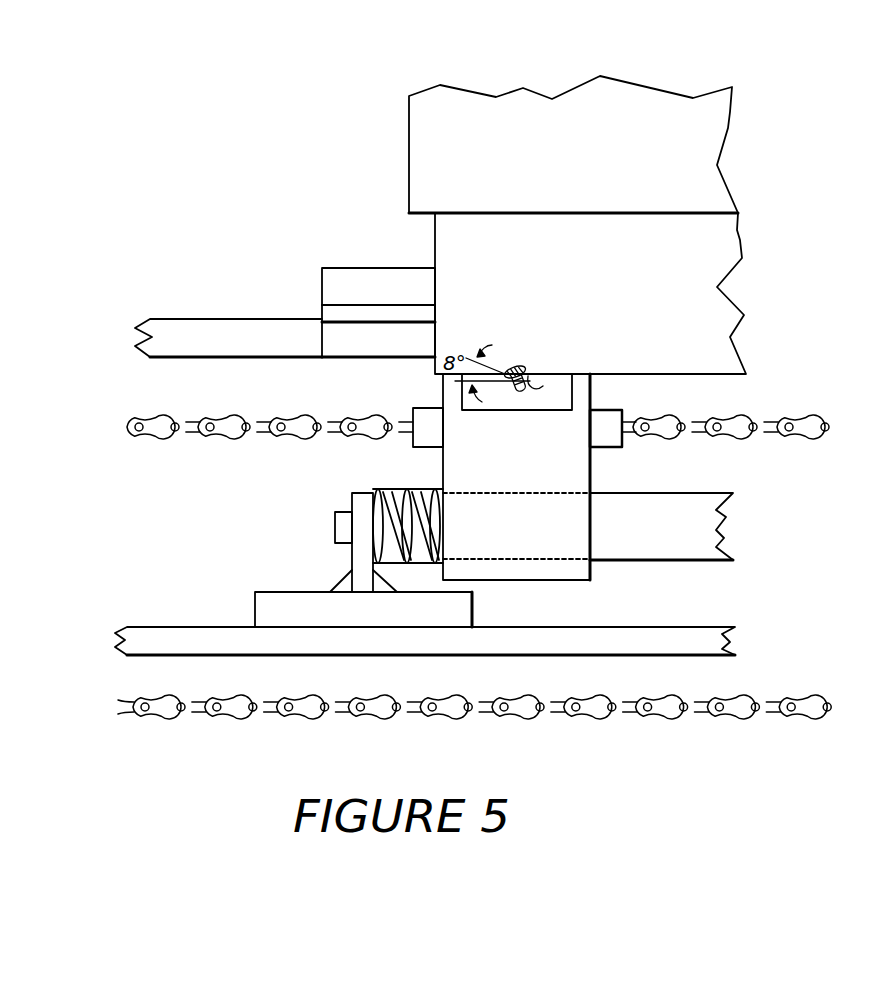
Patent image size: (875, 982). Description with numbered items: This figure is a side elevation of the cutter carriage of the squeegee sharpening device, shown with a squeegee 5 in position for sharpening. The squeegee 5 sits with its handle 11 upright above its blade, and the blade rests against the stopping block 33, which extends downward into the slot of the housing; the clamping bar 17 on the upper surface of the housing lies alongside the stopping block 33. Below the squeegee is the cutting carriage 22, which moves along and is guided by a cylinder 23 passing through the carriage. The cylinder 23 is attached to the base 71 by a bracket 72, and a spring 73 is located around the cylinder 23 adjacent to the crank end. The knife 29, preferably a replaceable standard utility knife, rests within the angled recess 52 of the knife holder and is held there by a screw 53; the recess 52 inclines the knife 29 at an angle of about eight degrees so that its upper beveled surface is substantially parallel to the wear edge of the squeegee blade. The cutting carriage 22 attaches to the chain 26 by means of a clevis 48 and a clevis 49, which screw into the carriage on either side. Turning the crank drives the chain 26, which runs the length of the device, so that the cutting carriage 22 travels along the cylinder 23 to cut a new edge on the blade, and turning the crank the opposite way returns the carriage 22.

The squeegee 5 is at (468, 86).
The handle 11 is at (660, 143).
The stopping block 33 is at (367, 268).
The clamping bar 17 is at (200, 330).
The knife 29 is at (505, 367).
The screw 53 is at (530, 368).
The recess 52 is at (535, 383).
The clevis 48 is at (432, 415).
The clevis 49 is at (598, 413).
The chain 26 is at (700, 412).
The cutting carriage 22 is at (525, 530).
The cylinder 23 is at (632, 530).
The spring 73 is at (378, 488).
The bracket 72 is at (358, 618).
The base 71 is at (232, 640).